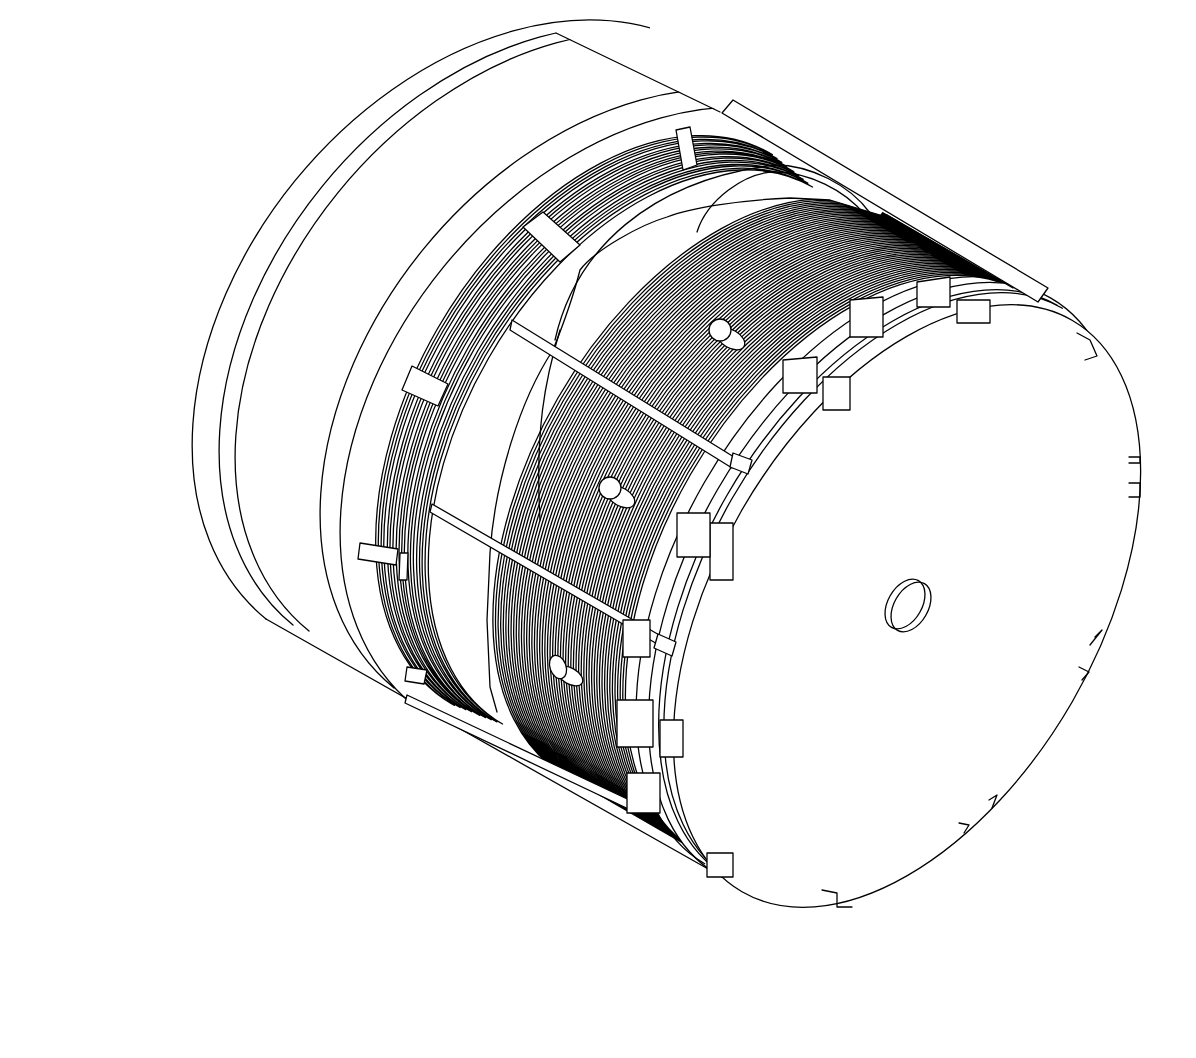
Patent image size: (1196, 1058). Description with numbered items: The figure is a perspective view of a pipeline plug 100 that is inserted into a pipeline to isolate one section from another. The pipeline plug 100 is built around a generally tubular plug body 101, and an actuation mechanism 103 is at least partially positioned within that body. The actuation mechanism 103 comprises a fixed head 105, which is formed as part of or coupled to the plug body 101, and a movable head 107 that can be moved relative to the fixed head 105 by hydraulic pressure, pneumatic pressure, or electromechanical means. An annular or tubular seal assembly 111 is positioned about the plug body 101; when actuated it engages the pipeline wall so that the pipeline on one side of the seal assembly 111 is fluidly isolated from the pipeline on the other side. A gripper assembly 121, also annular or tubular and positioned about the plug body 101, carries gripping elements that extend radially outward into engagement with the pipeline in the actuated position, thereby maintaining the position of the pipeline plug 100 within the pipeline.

The pipeline plug 100 is at (643, 501).
The plug body 101 is at (940, 605).
The actuation mechanism 103 is at (205, 347).
The fixed head 105 is at (548, 392).
The movable head 107 is at (867, 582).
The seal assembly 111 is at (713, 108).
The gripper assembly 121 is at (880, 188).